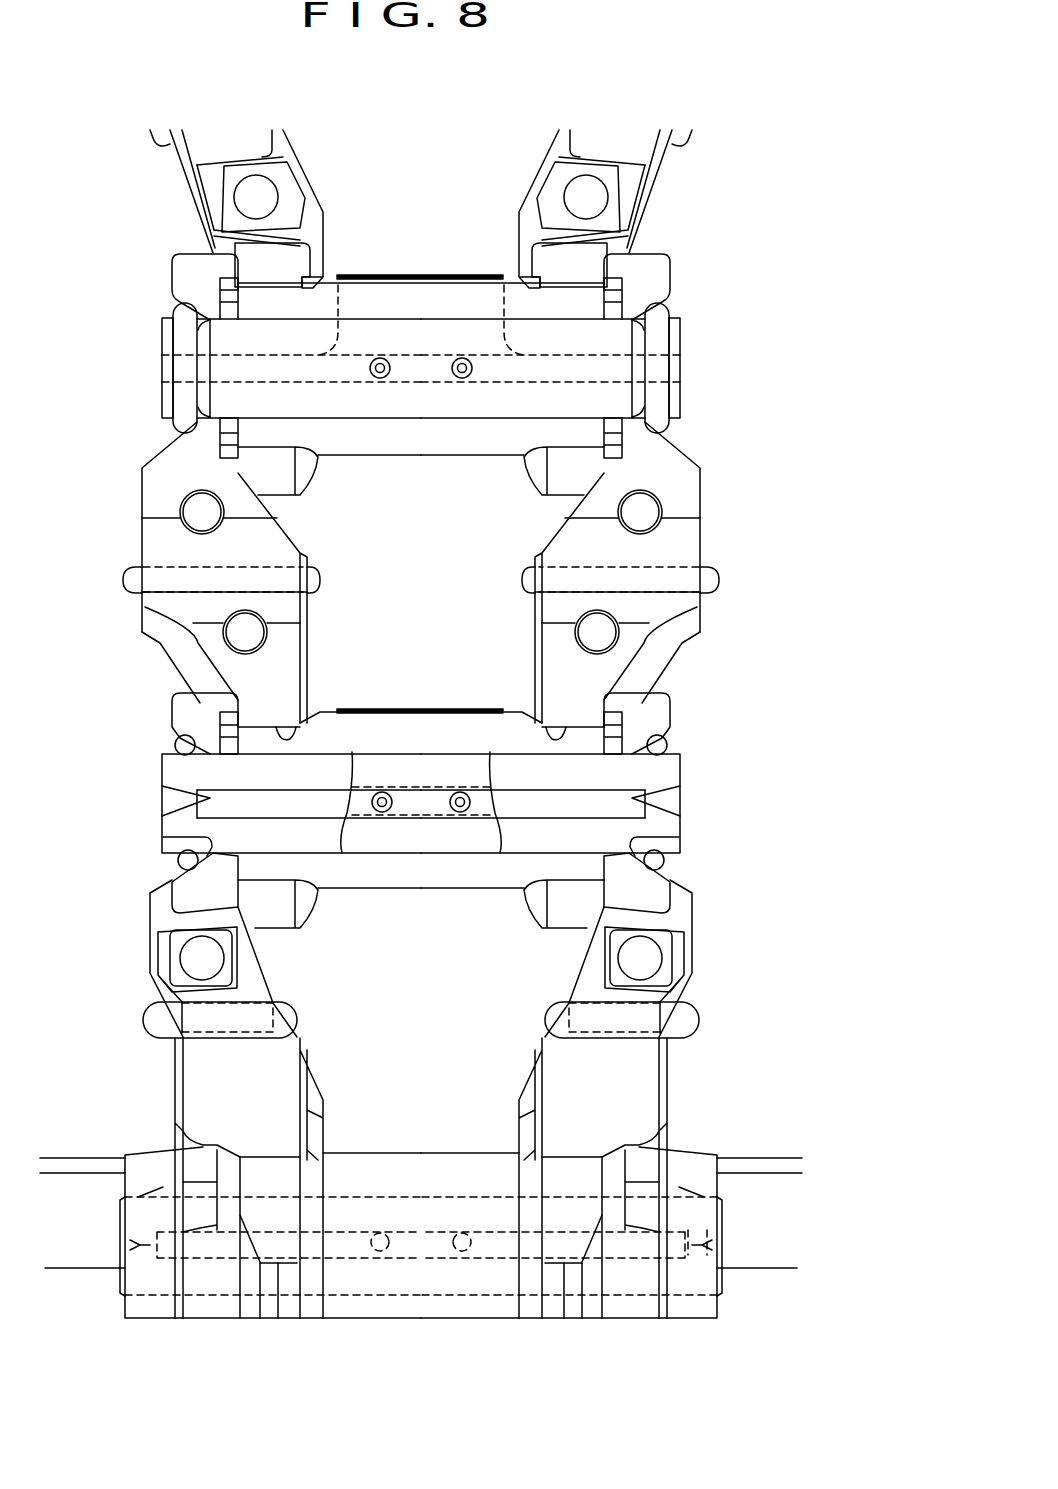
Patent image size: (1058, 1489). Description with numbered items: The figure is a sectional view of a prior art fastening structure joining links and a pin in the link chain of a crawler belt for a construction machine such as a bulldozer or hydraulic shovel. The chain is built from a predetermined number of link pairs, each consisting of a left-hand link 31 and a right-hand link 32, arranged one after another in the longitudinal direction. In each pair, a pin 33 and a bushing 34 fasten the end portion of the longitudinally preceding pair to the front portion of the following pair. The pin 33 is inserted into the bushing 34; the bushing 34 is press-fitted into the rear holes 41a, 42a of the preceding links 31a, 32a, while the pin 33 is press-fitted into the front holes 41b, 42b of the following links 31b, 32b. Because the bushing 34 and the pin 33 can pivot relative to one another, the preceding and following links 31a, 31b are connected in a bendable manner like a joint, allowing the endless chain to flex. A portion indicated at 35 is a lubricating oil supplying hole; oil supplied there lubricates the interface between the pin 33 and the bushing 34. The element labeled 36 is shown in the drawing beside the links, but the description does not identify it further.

The left-hand link 31 is at (195, 190).
The right-hand link 32 is at (643, 192).
The pin 33 is at (466, 330).
The bushing 34 is at (358, 292).
The lubricating oil supplying hole 35 is at (655, 800).
The roller 36 is at (175, 745).
The preceding link 31a is at (173, 547).
The preceding link 32a is at (680, 540).
The following link 31b is at (180, 900).
The following link 32b is at (665, 893).
The rear hole 41a is at (300, 723).
The rear hole 42a is at (542, 723).
The front hole 41b is at (175, 838).
The front hole 42b is at (668, 838).